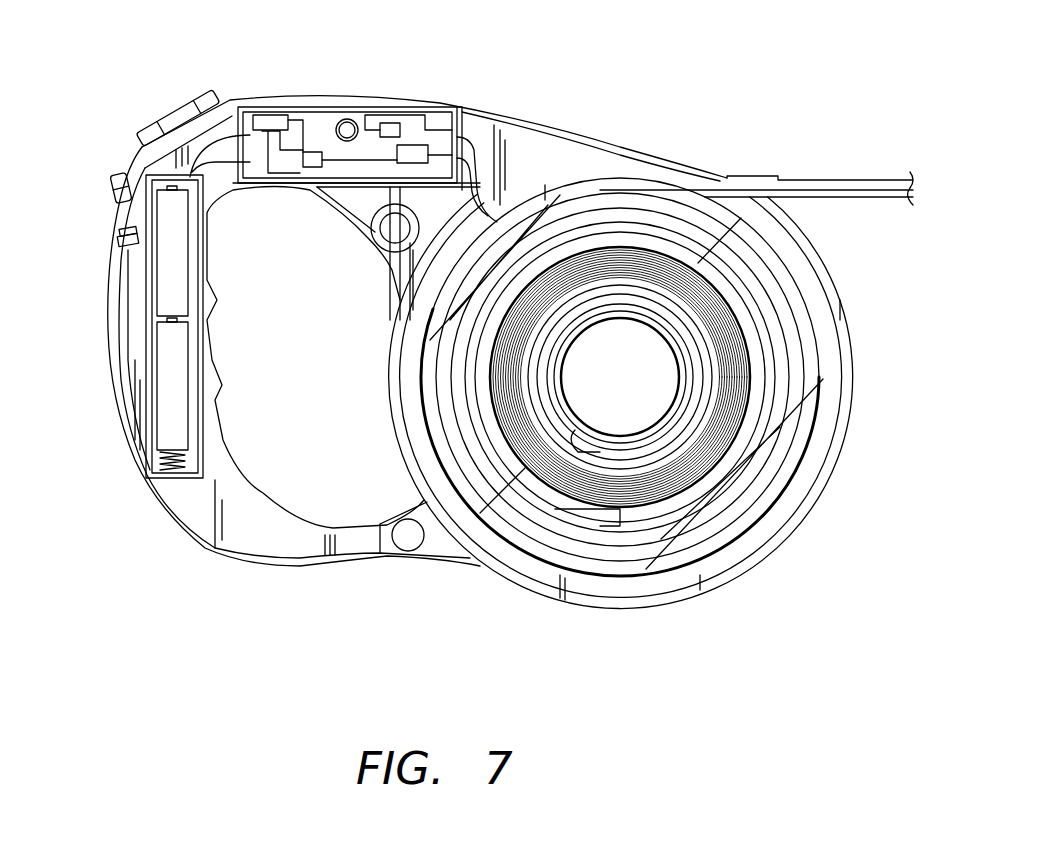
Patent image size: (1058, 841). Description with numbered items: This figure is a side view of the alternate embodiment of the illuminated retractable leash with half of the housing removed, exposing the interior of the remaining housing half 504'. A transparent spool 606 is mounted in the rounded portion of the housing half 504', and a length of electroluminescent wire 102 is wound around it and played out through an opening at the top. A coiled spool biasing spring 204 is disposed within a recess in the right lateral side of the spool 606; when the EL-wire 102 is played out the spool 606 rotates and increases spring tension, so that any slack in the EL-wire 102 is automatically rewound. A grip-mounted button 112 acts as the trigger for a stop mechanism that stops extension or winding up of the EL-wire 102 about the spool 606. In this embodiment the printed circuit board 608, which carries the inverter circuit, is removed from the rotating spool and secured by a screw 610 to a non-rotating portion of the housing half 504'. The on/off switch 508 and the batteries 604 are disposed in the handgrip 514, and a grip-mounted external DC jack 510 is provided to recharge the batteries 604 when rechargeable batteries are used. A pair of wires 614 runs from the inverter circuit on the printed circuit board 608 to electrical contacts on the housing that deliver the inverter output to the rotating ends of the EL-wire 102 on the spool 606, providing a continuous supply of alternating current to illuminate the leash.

The electroluminescent wire 102 is at (857, 180).
The button 112 is at (185, 104).
The coiled spring 204 is at (737, 347).
The housing half 504' is at (480, 394).
The on/off switch 508 is at (115, 176).
The external DC jack 510 is at (117, 237).
The handgrip 514 is at (112, 465).
The batteries 604 is at (185, 241).
The spool 606 is at (765, 525).
The printed circuit board 608 is at (447, 112).
The screw 610 is at (347, 118).
The wires 614 is at (473, 145).